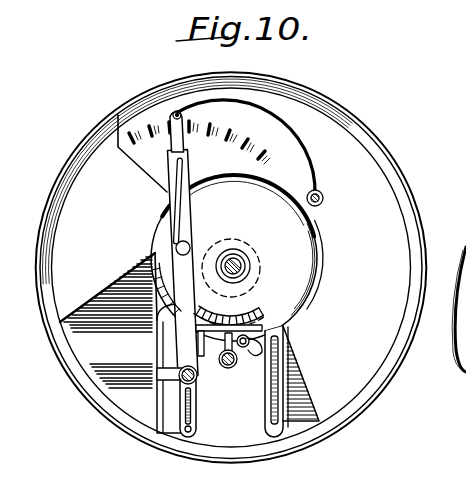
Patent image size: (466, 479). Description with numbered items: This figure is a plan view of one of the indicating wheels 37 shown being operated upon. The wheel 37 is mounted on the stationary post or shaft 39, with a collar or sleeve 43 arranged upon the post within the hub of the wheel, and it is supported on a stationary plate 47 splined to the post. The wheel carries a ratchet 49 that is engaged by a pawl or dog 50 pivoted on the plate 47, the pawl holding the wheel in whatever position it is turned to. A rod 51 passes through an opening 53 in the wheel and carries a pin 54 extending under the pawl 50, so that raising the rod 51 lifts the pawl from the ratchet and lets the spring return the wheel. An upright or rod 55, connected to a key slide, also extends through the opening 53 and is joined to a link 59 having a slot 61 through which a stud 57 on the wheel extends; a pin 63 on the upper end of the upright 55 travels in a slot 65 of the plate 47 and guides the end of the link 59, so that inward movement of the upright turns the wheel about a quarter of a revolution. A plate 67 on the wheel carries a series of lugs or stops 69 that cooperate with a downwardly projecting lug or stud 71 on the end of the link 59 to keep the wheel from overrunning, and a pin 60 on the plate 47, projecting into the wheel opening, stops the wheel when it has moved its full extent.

The indicating wheel 37 is at (421, 231).
The stationary post or shaft 39 is at (245, 249).
The collar or sleeve 43 is at (250, 266).
The stationary plate 47 is at (172, 390).
The ratchet 49 is at (237, 323).
The pawl or dog 50 is at (268, 318).
The rod 51 is at (220, 363).
The opening 53 is at (310, 412).
The pin 54 is at (252, 362).
The upright or rod 55 is at (170, 368).
The stud 57 is at (192, 250).
The link 59 is at (178, 318).
The pin 60 is at (255, 357).
The slot 61 is at (183, 213).
The pin 63 is at (195, 377).
The slot 65 is at (190, 413).
The plate 67 is at (288, 160).
The lugs or stops 69 is at (168, 139).
The lug or stud 71 is at (181, 113).